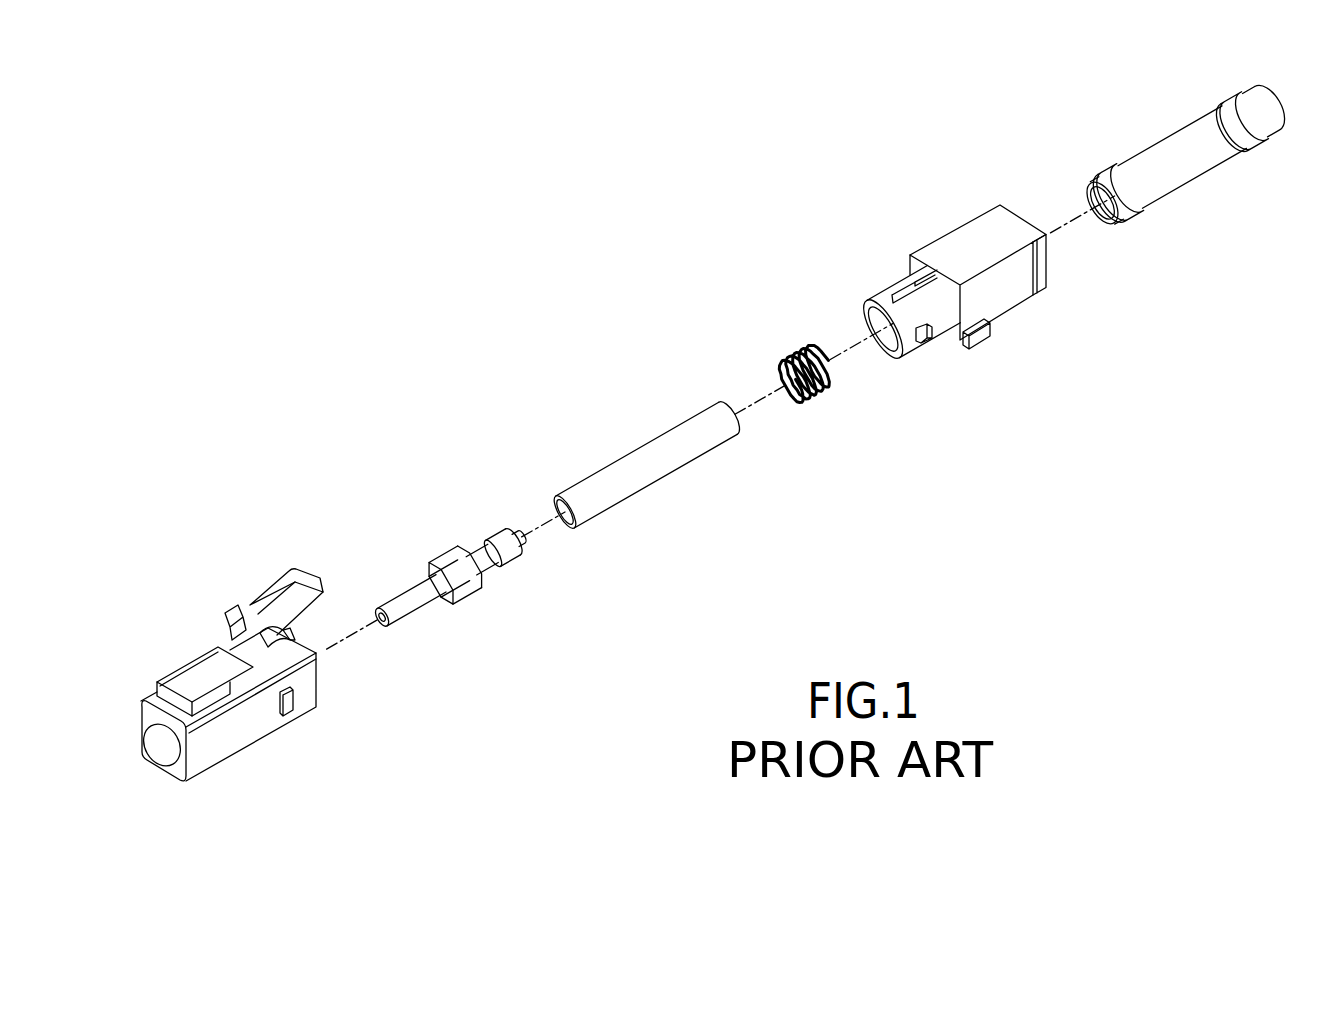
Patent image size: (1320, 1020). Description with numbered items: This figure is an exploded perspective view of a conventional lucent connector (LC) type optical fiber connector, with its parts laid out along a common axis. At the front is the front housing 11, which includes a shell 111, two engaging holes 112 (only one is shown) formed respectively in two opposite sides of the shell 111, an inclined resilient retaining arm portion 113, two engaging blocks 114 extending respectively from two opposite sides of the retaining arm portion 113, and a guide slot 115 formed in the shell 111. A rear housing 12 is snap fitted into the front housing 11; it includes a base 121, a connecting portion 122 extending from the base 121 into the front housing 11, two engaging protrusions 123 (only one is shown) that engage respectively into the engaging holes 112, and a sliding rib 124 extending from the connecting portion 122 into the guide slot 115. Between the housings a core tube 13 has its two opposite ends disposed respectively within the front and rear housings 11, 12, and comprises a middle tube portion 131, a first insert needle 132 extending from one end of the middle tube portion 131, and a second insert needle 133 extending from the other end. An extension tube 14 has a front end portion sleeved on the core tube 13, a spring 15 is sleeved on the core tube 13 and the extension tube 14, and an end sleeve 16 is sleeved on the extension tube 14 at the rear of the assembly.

The front housing 11 is at (160, 523).
The shell 111 is at (212, 764).
The engaging holes 112 is at (287, 715).
The inclined resilient retaining arm portion 113 is at (175, 678).
The engaging blocks 114 is at (268, 636).
The guide slot 115 is at (298, 642).
The rear housing 12 is at (1033, 373).
The base 121 is at (970, 230).
The connecting portion 122 is at (880, 292).
The engaging protrusions 123 is at (923, 341).
The sliding rib 124 is at (903, 277).
The core tube 13 is at (408, 530).
The middle tube portion 131 is at (463, 593).
The first insert needle 132 is at (407, 612).
The second insert needle 133 is at (507, 565).
The extension tube 14 is at (650, 457).
The spring 15 is at (784, 363).
The end sleeve 16 is at (1148, 168).